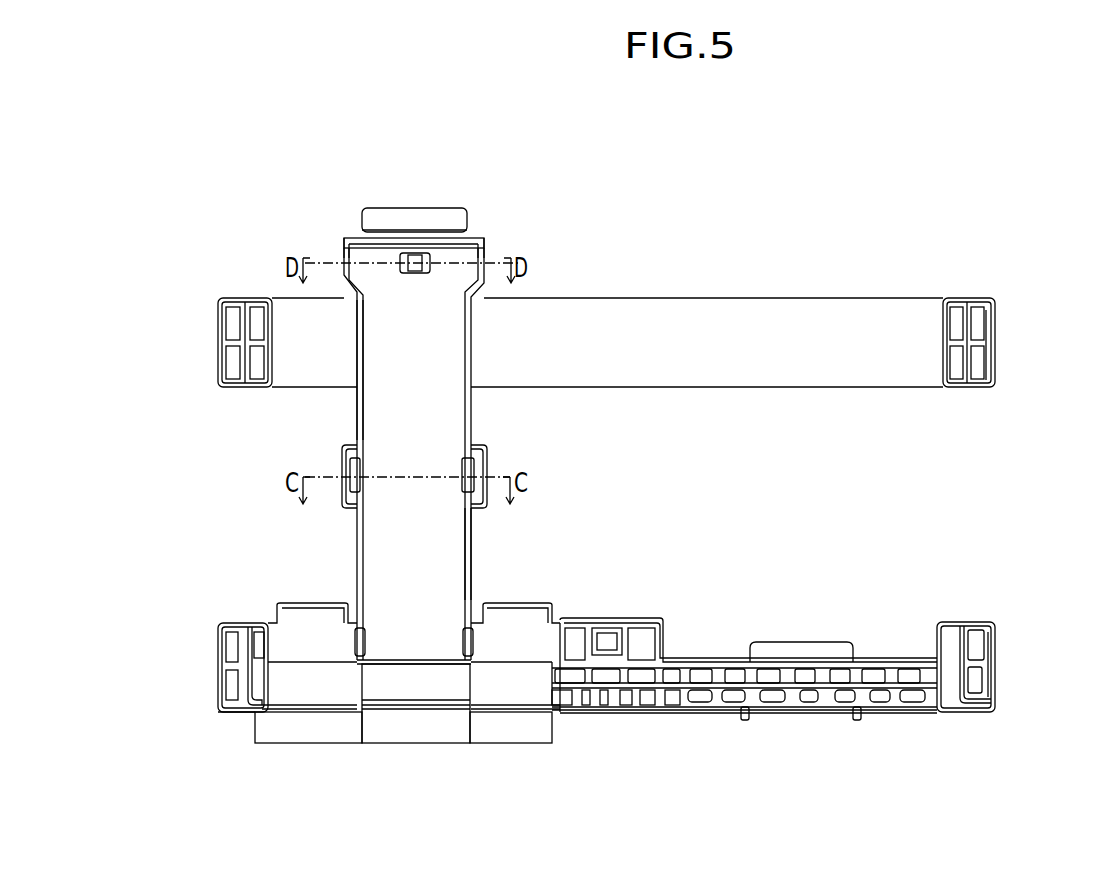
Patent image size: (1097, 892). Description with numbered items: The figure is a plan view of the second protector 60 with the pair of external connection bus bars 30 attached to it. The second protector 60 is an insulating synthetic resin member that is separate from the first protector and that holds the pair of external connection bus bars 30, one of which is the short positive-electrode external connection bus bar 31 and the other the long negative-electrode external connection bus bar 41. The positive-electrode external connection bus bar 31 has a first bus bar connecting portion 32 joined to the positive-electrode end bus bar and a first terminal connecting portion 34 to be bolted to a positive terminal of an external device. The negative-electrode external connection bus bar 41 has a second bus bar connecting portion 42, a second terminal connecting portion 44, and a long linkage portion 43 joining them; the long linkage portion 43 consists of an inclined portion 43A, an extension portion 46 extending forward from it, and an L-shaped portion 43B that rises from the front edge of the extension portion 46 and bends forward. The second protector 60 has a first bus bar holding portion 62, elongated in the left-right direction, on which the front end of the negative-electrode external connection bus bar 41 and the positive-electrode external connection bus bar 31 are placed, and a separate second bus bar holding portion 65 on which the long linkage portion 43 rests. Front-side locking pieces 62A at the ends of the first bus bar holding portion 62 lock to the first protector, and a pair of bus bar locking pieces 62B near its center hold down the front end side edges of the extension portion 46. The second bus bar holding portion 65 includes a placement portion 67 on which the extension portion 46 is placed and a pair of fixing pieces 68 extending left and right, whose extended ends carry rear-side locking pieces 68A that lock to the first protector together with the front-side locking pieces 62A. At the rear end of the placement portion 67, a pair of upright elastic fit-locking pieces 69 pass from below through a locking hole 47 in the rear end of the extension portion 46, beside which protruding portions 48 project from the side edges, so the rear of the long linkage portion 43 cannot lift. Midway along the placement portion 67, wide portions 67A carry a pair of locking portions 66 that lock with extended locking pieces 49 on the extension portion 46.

The external connection bus bar 30 is at (712, 812).
The positive-electrode external connection bus bar 31 is at (773, 715).
The first bus bar connecting portion 32 is at (797, 650).
The first terminal connecting portion 34 is at (812, 708).
The negative-electrode external connection bus bar 41 is at (476, 685).
The second bus bar connecting portion 42 is at (387, 215).
The long linkage portion 43 is at (355, 323).
The inclined portion 43A is at (440, 232).
The L-shaped portion 43B is at (377, 682).
The second terminal connecting portion 44 is at (382, 707).
The extension portion 46 is at (445, 335).
The locking hole 47 is at (420, 278).
The protruding portion 48 is at (357, 250).
The extended locking piece 49 is at (346, 460).
The second protector 60 is at (126, 445).
The first bus bar holding portion 62 is at (196, 665).
The front-side locking piece 62A is at (996, 665).
The bus bar locking piece 62B is at (466, 645).
The second bus bar holding portion 65 is at (306, 406).
The locking portion 66 is at (347, 493).
The placement portion 67 is at (474, 567).
The wide portion 67A is at (487, 447).
The fixing piece 68 is at (749, 320).
The rear-side locking piece 68A is at (1000, 345).
The fit-locking piece 69 is at (418, 252).